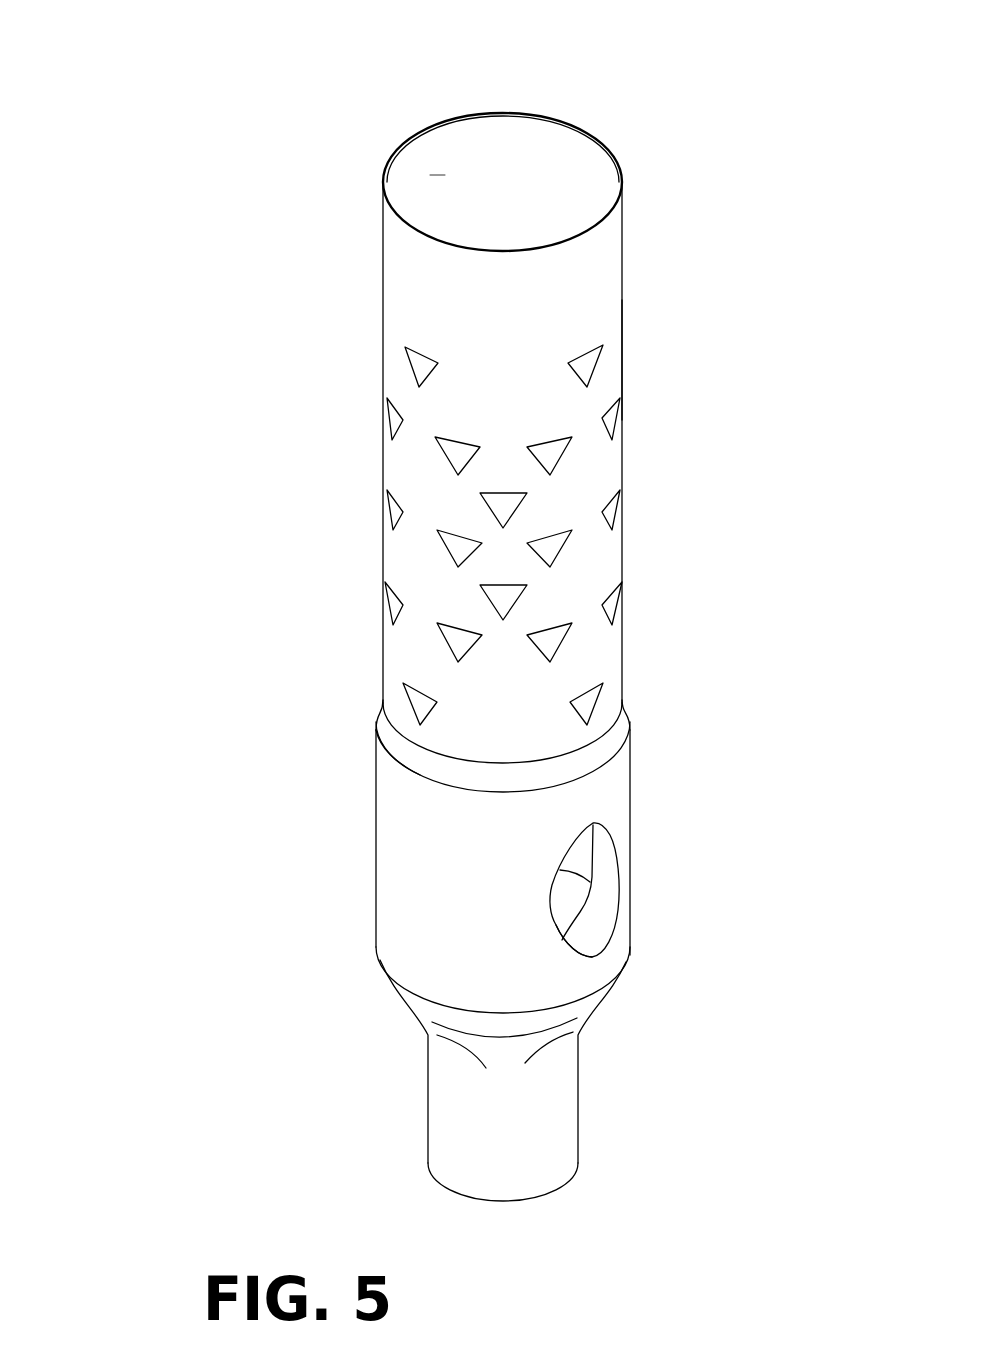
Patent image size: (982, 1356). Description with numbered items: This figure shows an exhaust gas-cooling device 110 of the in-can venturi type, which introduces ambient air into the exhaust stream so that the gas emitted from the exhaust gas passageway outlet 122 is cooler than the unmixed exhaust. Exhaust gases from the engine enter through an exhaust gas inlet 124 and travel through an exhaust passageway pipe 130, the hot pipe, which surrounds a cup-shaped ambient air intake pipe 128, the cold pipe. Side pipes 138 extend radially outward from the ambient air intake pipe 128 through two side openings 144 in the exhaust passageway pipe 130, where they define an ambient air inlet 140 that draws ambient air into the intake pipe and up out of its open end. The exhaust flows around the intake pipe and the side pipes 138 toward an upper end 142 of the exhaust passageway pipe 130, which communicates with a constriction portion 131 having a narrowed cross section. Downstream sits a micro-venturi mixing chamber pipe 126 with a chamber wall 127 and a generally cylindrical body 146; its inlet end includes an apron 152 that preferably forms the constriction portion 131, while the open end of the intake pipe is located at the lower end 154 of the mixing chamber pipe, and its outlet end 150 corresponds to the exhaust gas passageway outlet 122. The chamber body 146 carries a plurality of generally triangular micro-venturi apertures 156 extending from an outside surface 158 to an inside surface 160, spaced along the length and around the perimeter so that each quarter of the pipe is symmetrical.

The exhaust gas-cooling device 110 is at (186, 304).
The exhaust gas passageway outlet 122 is at (582, 128).
The exhaust gas inlet 124 is at (515, 1202).
The micro-venturi mixing chamber pipe 126 is at (575, 285).
The chamber wall 127 is at (575, 328).
The ambient air intake pipe 128 is at (606, 852).
The exhaust passageway pipe 130 is at (607, 800).
The constriction portion 131 is at (630, 717).
The side pipes 138 is at (602, 885).
The ambient air inlet 140 is at (610, 930).
The upper end of the exhaust passageway pipe 142 is at (390, 757).
The side openings 144 is at (602, 953).
The cylindrical body 146 is at (592, 467).
The outlet end 150 is at (505, 115).
The apron 152 is at (383, 702).
The lower end 154 is at (622, 698).
The micro-venturi apertures 156 is at (387, 420).
The outside surface 158 is at (597, 545).
The inside surface 160 is at (437, 173).